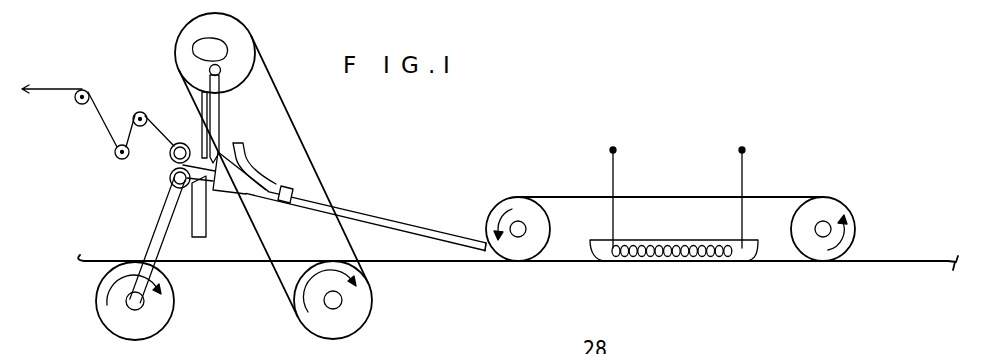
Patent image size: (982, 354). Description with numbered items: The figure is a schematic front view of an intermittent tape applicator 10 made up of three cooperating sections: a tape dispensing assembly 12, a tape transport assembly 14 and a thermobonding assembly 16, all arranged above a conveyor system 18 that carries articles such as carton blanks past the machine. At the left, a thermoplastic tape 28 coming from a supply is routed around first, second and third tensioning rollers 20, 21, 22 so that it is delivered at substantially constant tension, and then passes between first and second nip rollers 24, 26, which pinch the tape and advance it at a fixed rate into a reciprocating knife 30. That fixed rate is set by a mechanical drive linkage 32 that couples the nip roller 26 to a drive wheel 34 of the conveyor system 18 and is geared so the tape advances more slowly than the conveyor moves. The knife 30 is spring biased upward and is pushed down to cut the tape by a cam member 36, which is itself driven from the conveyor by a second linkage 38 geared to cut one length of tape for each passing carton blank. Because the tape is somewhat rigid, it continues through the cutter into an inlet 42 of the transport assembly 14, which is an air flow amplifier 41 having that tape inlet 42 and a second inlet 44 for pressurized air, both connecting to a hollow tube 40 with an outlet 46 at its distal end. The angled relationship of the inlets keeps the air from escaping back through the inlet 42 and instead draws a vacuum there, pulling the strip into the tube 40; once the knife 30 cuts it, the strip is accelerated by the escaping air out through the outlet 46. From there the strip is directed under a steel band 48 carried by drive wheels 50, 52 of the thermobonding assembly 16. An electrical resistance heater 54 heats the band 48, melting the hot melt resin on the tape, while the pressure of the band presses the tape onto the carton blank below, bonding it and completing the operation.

The intermittent tape applicator 10 is at (574, 101).
The tape dispensing assembly 12 is at (123, 66).
The tape transport assembly 14 is at (382, 184).
The thermobonding assembly 16 is at (670, 193).
The conveyor system 18 is at (422, 262).
The first tensioning roller 20 is at (80, 105).
The second tensioning roller 21 is at (122, 159).
The third tensioning roller 22 is at (140, 112).
The first nip roller 24 is at (181, 143).
The second nip roller 26 is at (170, 170).
The thermoplastic tape 28 is at (59, 89).
The reciprocating knife 30 is at (226, 103).
The mechanical drive linkage 32 is at (150, 228).
The drive wheel 34 is at (175, 295).
The cam member 36 is at (222, 42).
The second linkage 38 is at (303, 138).
The hollow tube 40 is at (407, 224).
The air flow amplifier 41 is at (269, 204).
The inlet 42 is at (227, 193).
The second inlet 44 is at (248, 160).
The outlet 46 is at (492, 257).
The steel band 48 is at (565, 195).
The drive wheel 50 is at (550, 226).
The drive wheel 52 is at (793, 218).
The electrical resistance heater 54 is at (650, 233).